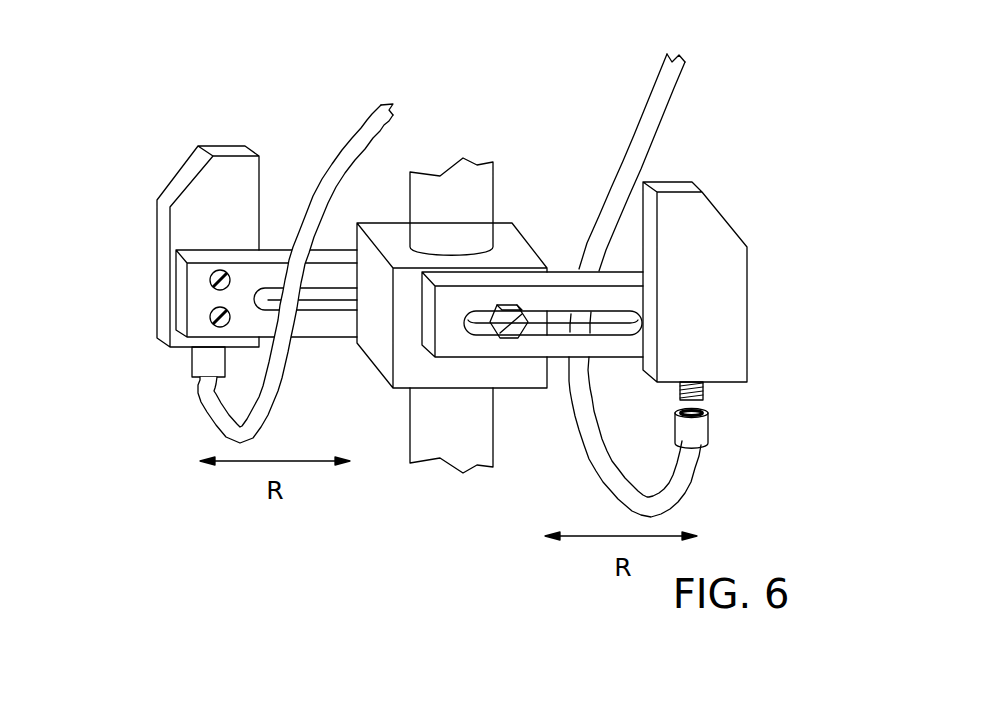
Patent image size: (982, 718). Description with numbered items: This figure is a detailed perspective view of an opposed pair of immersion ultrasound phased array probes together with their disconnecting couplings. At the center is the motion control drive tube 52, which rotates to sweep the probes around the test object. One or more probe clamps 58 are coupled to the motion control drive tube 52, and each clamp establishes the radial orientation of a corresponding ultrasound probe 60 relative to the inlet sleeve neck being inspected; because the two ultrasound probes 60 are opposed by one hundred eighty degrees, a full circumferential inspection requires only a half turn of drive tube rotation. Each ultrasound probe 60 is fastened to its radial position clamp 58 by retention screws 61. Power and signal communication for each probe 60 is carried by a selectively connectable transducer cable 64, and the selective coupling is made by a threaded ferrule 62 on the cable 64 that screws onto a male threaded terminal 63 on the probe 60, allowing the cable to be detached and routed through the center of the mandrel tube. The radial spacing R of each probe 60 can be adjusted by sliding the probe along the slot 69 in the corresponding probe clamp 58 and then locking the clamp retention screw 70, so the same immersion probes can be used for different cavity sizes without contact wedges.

The motion control drive tube 52 is at (477, 203).
The probe clamp 58 is at (455, 335).
The ultrasound probe 60 is at (210, 203).
The retention screws 61 is at (210, 315).
The threaded ferrule 62 is at (210, 373).
The male threaded terminal 63 is at (707, 390).
The transducer cable 64 is at (373, 133).
The slot 69 is at (556, 322).
The clamp retention screw 70 is at (503, 337).